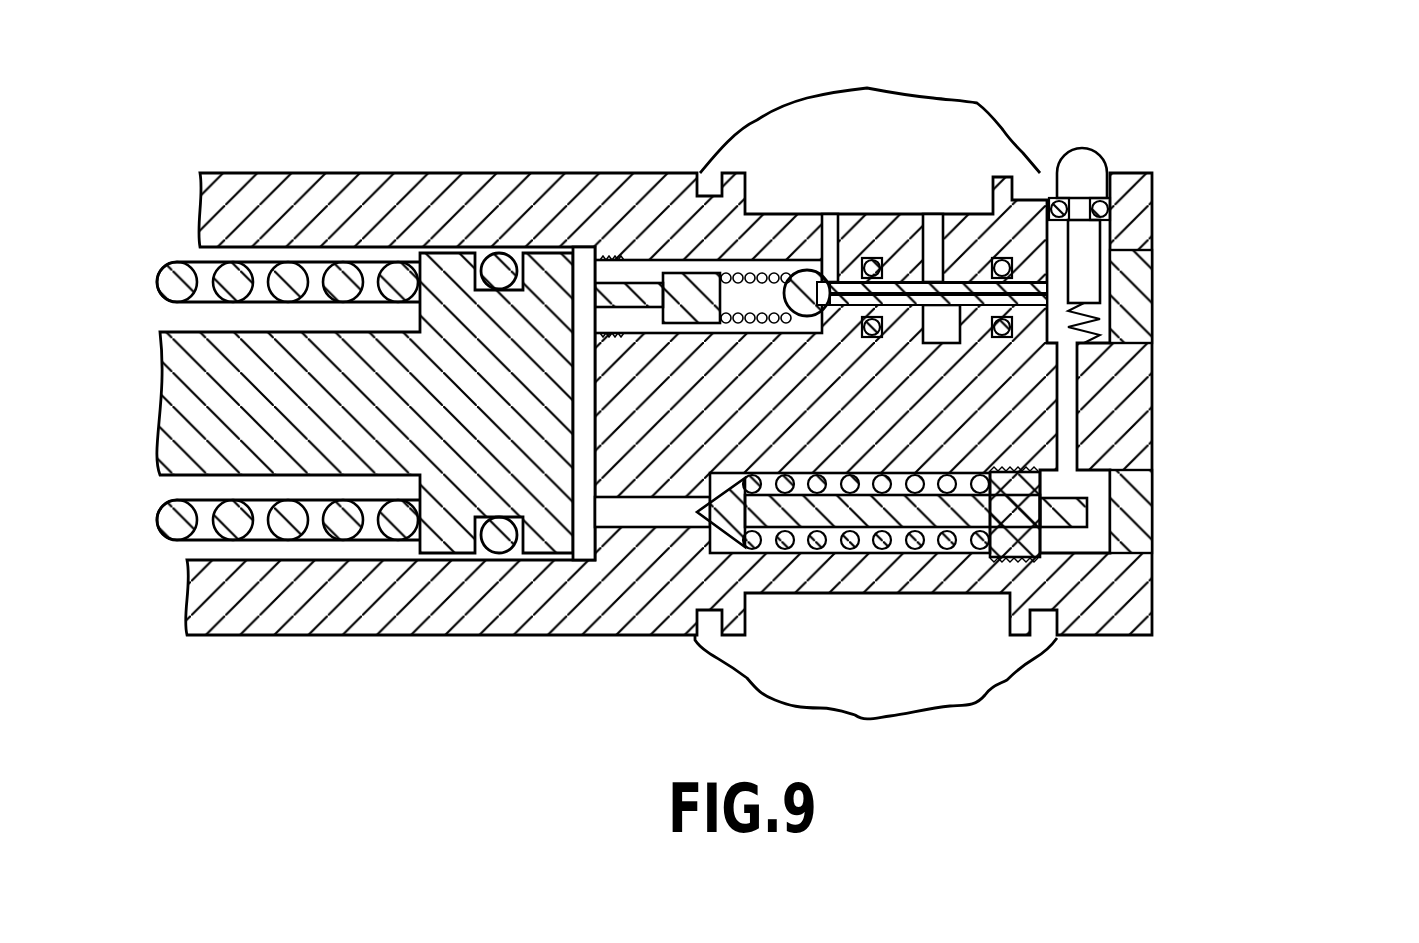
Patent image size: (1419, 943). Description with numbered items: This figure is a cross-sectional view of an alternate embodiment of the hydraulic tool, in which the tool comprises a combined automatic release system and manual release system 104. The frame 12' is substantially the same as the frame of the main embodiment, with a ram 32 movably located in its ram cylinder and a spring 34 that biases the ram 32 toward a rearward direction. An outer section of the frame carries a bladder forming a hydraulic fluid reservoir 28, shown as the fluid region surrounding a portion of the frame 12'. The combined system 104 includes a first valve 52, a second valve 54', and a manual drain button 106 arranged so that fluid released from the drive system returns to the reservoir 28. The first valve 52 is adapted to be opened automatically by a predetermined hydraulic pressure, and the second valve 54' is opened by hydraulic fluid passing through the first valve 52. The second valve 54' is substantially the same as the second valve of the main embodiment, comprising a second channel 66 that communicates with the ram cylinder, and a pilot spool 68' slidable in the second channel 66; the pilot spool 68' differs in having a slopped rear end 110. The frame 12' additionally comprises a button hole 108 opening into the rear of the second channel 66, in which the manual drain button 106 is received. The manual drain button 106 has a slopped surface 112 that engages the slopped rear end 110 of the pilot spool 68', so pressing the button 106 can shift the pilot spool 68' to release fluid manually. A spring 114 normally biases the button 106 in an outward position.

The frame 12' is at (669, 365).
The spring 34 is at (175, 277).
The ram 32 is at (170, 380).
The second valve 54' is at (821, 218).
The second channel 66 is at (743, 262).
The hydraulic fluid reservoir 28 is at (867, 88).
The pilot spool 68' is at (937, 191).
The slopped rear end 110 is at (1062, 338).
The manual drain button 106 is at (1093, 148).
The slopped surface 112 is at (1050, 283).
The button hole 108 is at (1085, 300).
The spring 114 is at (1085, 340).
The combined automatic release system and manual release system 104 is at (1300, 563).
The first valve 52 is at (1013, 557).